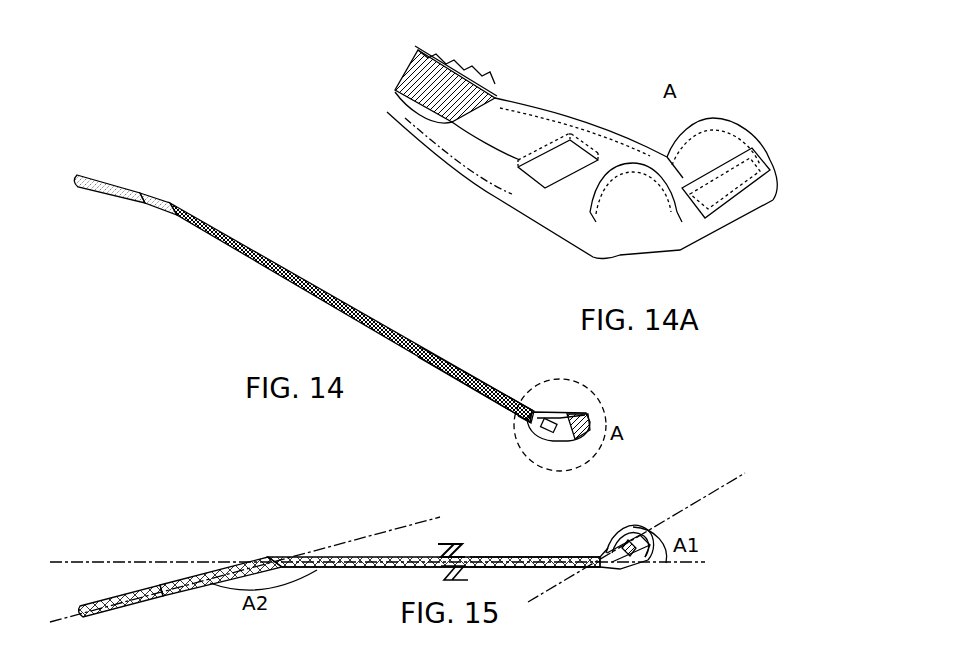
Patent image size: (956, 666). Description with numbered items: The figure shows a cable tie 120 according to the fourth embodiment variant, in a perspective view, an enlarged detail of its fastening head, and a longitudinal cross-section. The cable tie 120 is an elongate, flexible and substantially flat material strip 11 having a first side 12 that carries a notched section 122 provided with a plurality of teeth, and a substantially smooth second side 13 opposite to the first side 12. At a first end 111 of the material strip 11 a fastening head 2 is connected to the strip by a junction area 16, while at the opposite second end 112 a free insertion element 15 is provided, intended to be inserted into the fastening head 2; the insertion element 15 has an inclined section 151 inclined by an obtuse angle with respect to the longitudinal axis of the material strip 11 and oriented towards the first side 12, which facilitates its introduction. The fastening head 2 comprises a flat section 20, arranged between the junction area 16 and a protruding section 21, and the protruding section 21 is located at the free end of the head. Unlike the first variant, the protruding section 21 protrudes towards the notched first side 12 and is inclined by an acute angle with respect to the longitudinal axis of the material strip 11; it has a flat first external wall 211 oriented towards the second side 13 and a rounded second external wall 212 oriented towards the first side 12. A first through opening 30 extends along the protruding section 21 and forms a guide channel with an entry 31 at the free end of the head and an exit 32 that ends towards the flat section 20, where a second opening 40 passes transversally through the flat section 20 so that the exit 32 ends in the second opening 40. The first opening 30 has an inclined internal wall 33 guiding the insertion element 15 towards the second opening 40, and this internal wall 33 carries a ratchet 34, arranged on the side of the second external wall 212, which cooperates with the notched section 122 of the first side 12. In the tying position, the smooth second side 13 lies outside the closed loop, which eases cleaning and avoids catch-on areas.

In FIG. 14, the fastening head 2 is at (515, 448).
In FIG. 14A, the fastening head 2 is at (531, 160).
In FIG. 15, the fastening head 2 is at (621, 564).
In FIG. 14, the material strip 11 is at (313, 312).
In FIG. 15, the material strip 11 is at (433, 564).
In FIG. 14, the first side 12 is at (303, 285).
In FIG. 15, the first side 12 is at (400, 552).
In FIG. 15, the second side 13 is at (360, 572).
In FIG. 14, the insertion element 15 is at (101, 174).
In FIG. 15, the insertion element 15 is at (137, 586).
In FIG. 14, the junction area 16 is at (530, 418).
In FIG. 14A, the junction area 16 is at (477, 137).
In FIG. 14A, the flat section 20 is at (623, 183).
In FIG. 15, the flat section 20 is at (583, 586).
In FIG. 14A, the protruding section 21 is at (646, 235).
In FIG. 15, the protruding section 21 is at (652, 551).
In FIG. 14A, the first through opening 30 is at (725, 165).
In FIG. 15, the first through opening 30 is at (672, 577).
In FIG. 14A, the entry 31 is at (712, 213).
In FIG. 15, the entry 31 is at (653, 537).
In FIG. 15, the exit 32 is at (620, 557).
In FIG. 15, the internal wall 33 is at (620, 567).
In FIG. 14A, the ratchet 34 is at (665, 157).
In FIG. 15, the ratchet 34 is at (650, 589).
In FIG. 14A, the second opening 40 is at (582, 188).
In FIG. 15, the second opening 40 is at (600, 560).
In FIG. 14, the first end 111 is at (543, 403).
In FIG. 14, the second end 112 is at (157, 208).
In FIG. 15, the second end 112 is at (257, 550).
In FIG. 14, the cable tie 120 is at (394, 255).
In FIG. 15, the cable tie 120 is at (331, 560).
In FIG. 14, the notched section 122 is at (340, 293).
In FIG. 14A, the notched section 122 is at (395, 91).
In FIG. 15, the notched section 122 is at (413, 553).
In FIG. 14, the inclined section 151 is at (105, 193).
In FIG. 15, the inclined section 151 is at (157, 597).
In FIG. 14A, the first external wall 211 is at (647, 258).
In FIG. 15, the first external wall 211 is at (647, 547).
In FIG. 14A, the second external wall 212 is at (723, 130).
In FIG. 15, the second external wall 212 is at (633, 528).